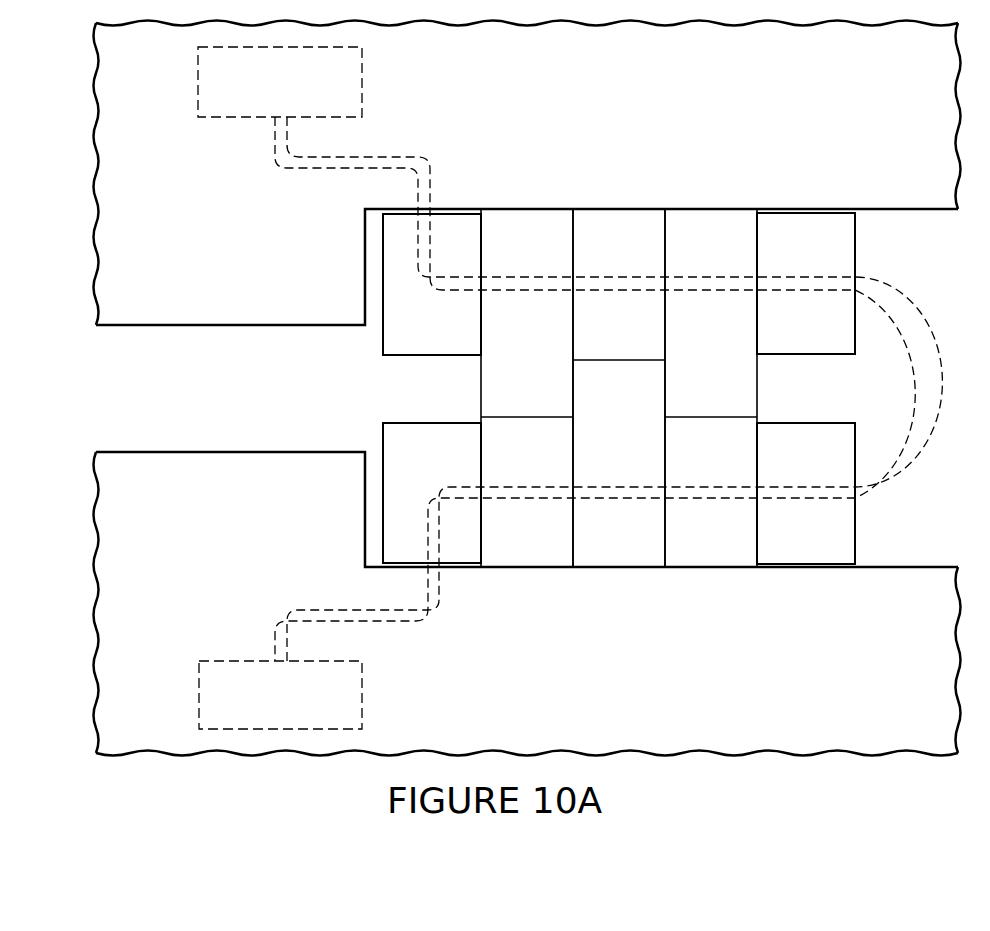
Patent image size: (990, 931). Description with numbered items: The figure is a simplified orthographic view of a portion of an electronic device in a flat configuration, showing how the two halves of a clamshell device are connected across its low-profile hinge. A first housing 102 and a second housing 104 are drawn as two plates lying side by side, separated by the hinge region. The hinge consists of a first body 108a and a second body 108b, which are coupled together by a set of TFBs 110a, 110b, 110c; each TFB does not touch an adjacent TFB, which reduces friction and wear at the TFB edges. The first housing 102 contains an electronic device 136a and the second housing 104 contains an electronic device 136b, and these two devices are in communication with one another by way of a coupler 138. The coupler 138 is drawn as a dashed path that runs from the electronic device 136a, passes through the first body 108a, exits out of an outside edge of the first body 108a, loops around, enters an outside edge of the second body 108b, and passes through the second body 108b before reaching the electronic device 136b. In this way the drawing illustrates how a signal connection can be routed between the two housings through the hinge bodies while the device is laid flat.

The first housing 102 is at (97, 190).
The second housing 104 is at (93, 600).
The first body 108a is at (807, 356).
The second body 108b is at (431, 423).
The TFB 110a is at (713, 560).
The TFB 110b is at (618, 560).
The TFB 110c is at (527, 560).
The electronic device 136a is at (198, 73).
The electronic device 136b is at (199, 700).
The coupler 138 is at (322, 170).